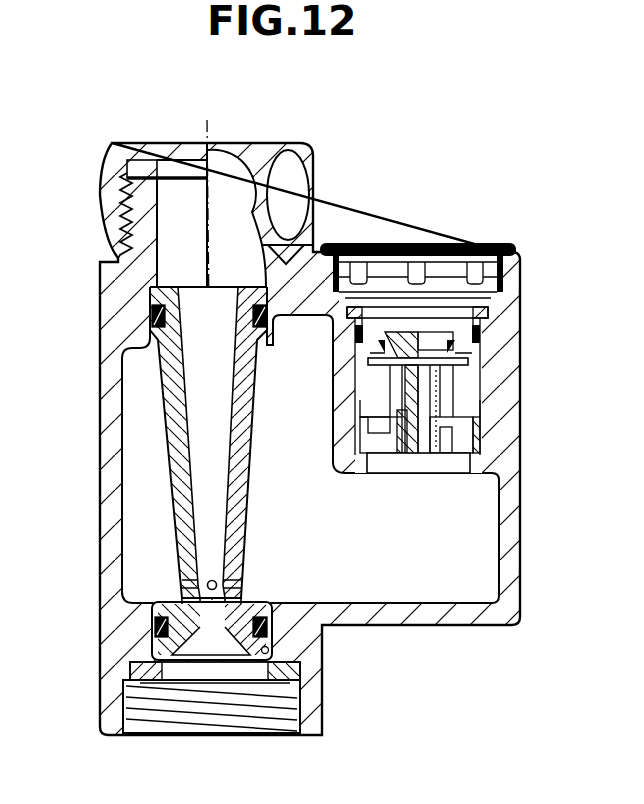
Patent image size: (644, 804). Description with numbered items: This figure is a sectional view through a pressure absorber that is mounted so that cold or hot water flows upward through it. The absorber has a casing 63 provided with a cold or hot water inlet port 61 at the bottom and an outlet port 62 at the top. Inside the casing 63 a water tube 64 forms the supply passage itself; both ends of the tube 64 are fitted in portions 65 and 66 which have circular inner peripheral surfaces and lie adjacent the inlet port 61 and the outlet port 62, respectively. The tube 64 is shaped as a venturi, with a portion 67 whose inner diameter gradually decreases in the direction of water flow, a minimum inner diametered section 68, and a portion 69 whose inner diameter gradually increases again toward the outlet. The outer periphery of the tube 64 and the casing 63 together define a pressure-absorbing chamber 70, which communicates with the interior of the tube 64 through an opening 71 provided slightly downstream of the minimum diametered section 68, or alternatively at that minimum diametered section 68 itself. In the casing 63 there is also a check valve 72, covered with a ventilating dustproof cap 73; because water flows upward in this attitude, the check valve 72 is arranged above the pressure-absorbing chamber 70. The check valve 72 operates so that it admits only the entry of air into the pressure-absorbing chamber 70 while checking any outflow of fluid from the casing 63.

The inlet port 61 is at (132, 710).
The outlet port 62 is at (175, 178).
The casing 63 is at (100, 604).
The water tube 64 is at (253, 447).
The portion with circular inner peripheral surface 65 is at (296, 652).
The portion with circular inner peripheral surface 66 is at (152, 291).
The decreasing inner diameter portion 67 is at (236, 662).
The minimum inner diametered section 68 is at (192, 603).
The increasing inner diameter portion 69 is at (192, 447).
The pressure-absorbing chamber 70 is at (320, 501).
The opening 71 is at (232, 572).
The check valve 72 is at (452, 393).
The ventilating dustproof cap 73 is at (432, 243).